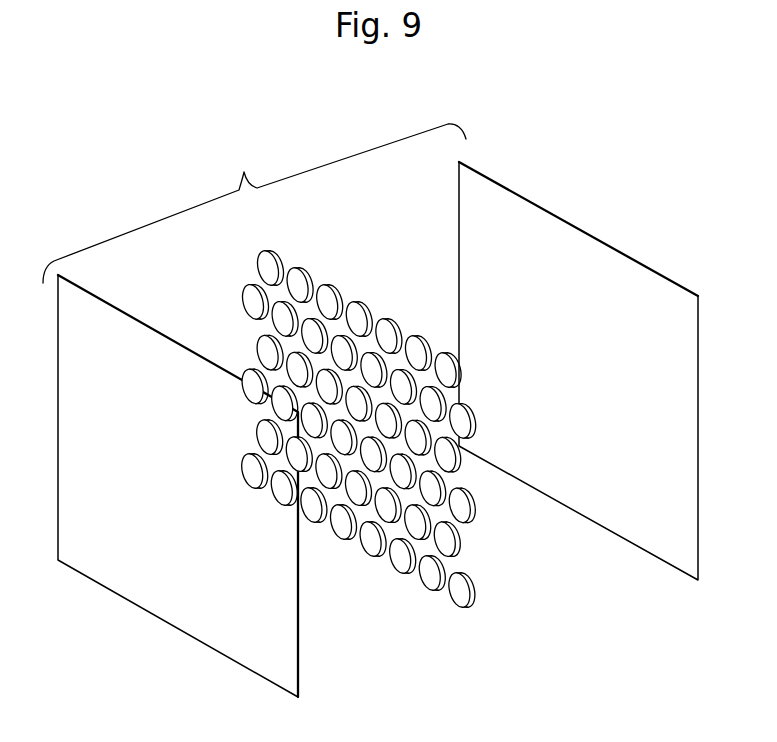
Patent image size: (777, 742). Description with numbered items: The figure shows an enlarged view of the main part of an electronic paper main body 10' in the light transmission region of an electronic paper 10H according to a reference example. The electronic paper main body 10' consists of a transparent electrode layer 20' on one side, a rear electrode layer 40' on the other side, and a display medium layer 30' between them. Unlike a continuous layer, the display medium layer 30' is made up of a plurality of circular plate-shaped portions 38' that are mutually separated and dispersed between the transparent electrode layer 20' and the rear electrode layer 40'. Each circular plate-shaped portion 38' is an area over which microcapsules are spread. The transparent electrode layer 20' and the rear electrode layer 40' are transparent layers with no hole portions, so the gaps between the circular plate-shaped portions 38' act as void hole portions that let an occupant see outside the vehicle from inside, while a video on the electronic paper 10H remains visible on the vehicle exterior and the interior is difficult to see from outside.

The electronic paper 10H is at (141, 178).
The electronic paper main body 10' is at (254, 203).
The transparent electrode layer 20' is at (178, 506).
The display medium layer 30' is at (358, 439).
The circular plate-shaped portion 38' is at (292, 252).
The rear electrode layer 40' is at (578, 394).